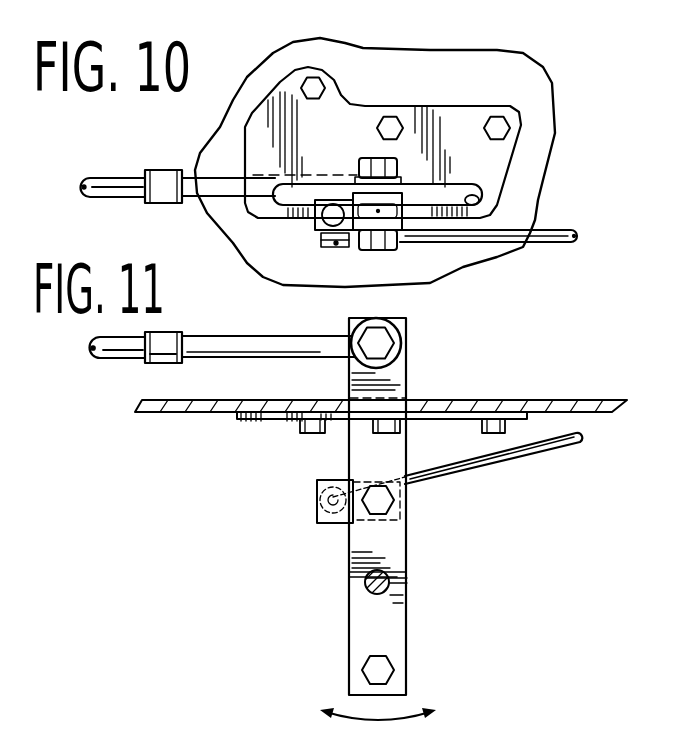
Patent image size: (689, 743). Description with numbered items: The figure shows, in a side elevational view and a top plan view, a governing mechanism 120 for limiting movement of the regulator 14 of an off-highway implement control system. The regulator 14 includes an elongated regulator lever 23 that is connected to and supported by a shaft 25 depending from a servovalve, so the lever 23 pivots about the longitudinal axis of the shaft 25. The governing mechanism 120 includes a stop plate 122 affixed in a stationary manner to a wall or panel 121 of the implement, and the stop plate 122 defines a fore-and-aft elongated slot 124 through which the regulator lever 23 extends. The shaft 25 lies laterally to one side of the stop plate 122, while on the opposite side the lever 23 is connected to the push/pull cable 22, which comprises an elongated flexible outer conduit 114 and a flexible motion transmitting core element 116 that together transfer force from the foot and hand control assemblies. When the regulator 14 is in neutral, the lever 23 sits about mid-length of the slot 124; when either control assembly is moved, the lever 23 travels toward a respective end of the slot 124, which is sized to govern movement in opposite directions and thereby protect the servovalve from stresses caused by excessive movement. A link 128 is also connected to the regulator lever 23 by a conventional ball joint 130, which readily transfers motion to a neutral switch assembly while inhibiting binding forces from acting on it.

In FIG. 10, the regulator 14 is at (423, 233).
In FIG. 11, the regulator 14 is at (370, 506).
In FIG. 10, the push/pull cable 22 is at (169, 165).
In FIG. 11, the push/pull cable 22 is at (168, 326).
In FIG. 10, the regulator lever 23 is at (405, 198).
In FIG. 11, the regulator lever 23 is at (387, 543).
In FIG. 11, the shaft 25 is at (397, 587).
In FIG. 10, the outer conduit 114 is at (108, 187).
In FIG. 11, the outer conduit 114 is at (123, 350).
In FIG. 10, the core element 116 is at (232, 184).
In FIG. 11, the core element 116 is at (288, 350).
In FIG. 10, the governing mechanism 120 is at (405, 116).
In FIG. 11, the governing mechanism 120 is at (326, 449).
In FIG. 10, the wall 121 is at (522, 174).
In FIG. 11, the wall 121 is at (557, 398).
In FIG. 10, the stop plate 122 is at (352, 118).
In FIG. 11, the stop plate 122 is at (233, 418).
In FIG. 10, the elongated slot 124 is at (480, 200).
In FIG. 10, the link 128 is at (558, 234).
In FIG. 11, the link 128 is at (552, 446).
In FIG. 10, the ball joint 130 is at (324, 240).